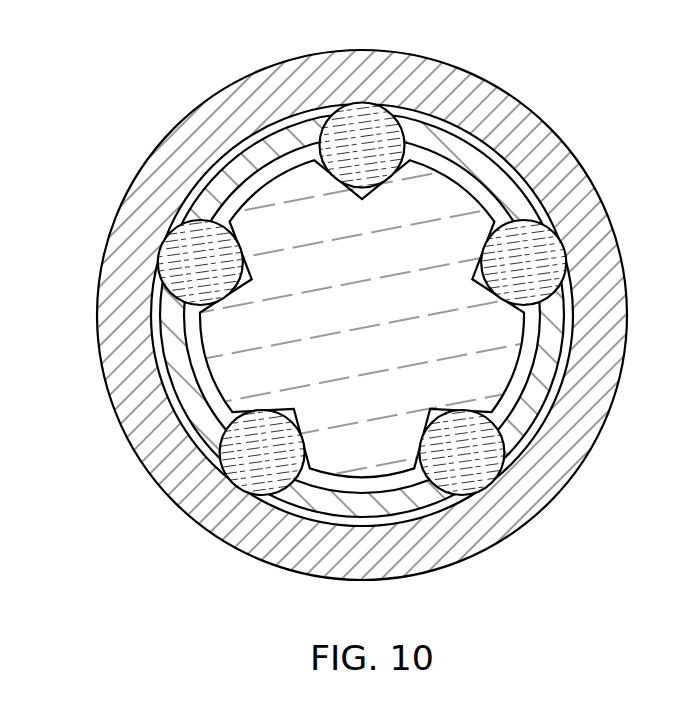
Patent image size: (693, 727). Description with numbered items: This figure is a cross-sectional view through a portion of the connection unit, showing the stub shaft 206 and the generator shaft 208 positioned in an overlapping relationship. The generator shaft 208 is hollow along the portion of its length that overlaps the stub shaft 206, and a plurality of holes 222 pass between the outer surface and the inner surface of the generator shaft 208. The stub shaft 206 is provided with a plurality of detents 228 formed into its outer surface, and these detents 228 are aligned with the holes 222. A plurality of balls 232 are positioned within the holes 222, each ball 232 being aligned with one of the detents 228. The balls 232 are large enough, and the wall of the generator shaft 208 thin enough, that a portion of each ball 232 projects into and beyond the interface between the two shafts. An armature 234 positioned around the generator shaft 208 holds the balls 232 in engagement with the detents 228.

The stub shaft 206 is at (498, 370).
The generator shaft 208 is at (173, 348).
The holes 222 is at (327, 122).
The detents 228 is at (237, 237).
The balls 232 is at (355, 120).
The armature 234 is at (535, 126).